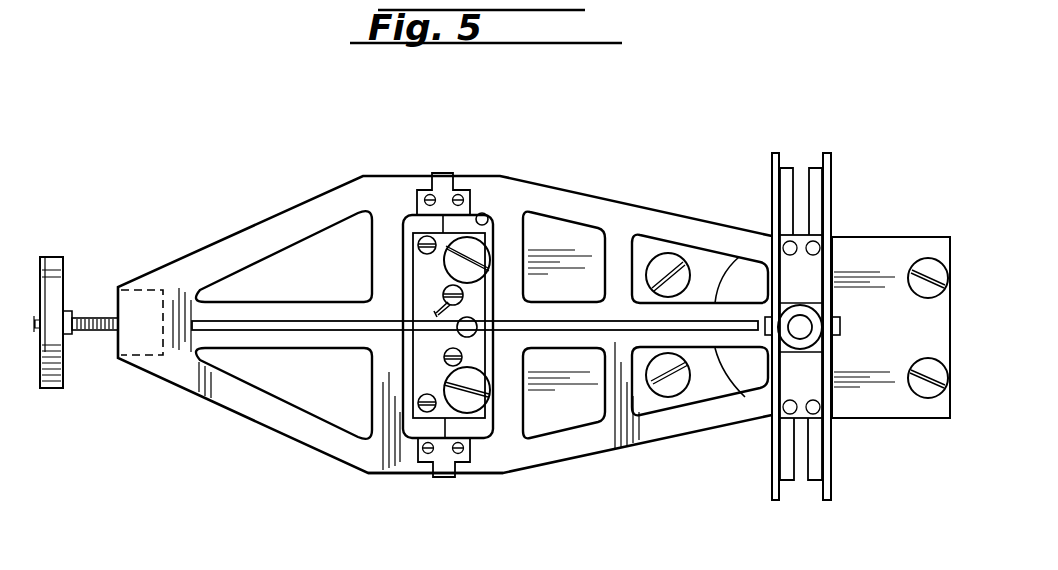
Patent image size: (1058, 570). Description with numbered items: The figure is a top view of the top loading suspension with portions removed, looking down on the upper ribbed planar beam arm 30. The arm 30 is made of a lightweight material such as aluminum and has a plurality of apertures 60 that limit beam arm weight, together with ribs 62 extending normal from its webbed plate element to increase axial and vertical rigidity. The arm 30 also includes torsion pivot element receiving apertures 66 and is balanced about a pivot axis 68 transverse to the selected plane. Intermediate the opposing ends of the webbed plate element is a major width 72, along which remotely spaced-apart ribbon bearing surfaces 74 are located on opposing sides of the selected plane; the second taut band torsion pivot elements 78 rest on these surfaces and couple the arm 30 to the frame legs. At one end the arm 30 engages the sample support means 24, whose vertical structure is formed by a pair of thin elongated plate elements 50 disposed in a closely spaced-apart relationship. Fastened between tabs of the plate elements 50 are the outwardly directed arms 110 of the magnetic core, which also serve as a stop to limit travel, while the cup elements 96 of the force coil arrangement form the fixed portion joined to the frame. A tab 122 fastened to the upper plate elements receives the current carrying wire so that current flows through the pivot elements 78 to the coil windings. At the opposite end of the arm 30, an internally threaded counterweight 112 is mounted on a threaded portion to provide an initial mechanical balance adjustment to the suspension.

The sample support means 24 is at (834, 222).
The upper ribbed planar beam arm 30 is at (632, 200).
The thin elongated plate elements 50 is at (827, 153).
The apertures 60 is at (272, 262).
The ribs 62 is at (321, 333).
The torsion pivot element receiving apertures 66 is at (484, 213).
The pivot axis 68 is at (444, 480).
The major widths 72 is at (497, 476).
The ribbon bearing surfaces 74 is at (445, 191).
The second taut band torsion pivot elements 78 is at (401, 217).
The cup elements 96 is at (742, 396).
The outwardly directed arms 110 is at (824, 437).
The counterweights 112 is at (64, 388).
The tab 122 is at (437, 299).